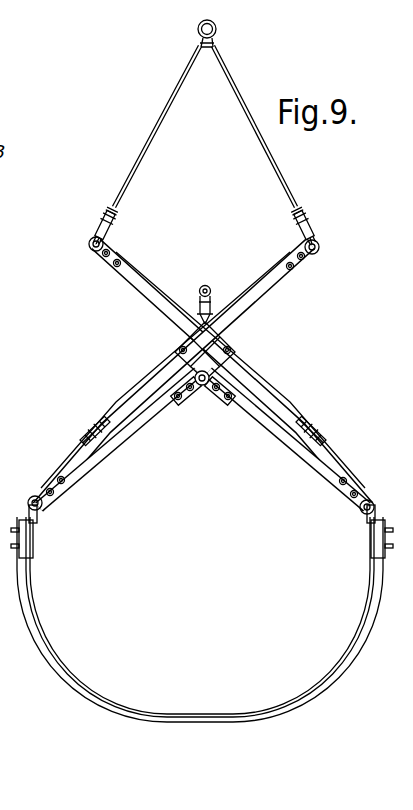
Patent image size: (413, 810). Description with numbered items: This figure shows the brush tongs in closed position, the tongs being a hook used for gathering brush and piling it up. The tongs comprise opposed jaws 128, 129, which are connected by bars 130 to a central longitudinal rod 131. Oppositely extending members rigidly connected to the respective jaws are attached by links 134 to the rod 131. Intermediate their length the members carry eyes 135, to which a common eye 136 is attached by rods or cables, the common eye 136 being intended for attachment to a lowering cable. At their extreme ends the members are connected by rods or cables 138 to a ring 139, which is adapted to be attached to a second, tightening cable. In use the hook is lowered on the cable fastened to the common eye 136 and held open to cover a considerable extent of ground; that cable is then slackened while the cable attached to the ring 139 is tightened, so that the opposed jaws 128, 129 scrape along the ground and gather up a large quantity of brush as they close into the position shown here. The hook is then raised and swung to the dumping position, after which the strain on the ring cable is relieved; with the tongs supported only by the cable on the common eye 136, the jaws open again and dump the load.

The opposed jaw 128 is at (363, 615).
The opposed jaw 129 is at (35, 618).
The bars 130 is at (125, 437).
The central longitudinal rod 131 is at (202, 386).
The links 134 is at (193, 350).
The eyes 135 is at (77, 443).
The common eye 136 is at (207, 285).
The rods or cables 138 is at (242, 112).
The ring 139 is at (217, 32).